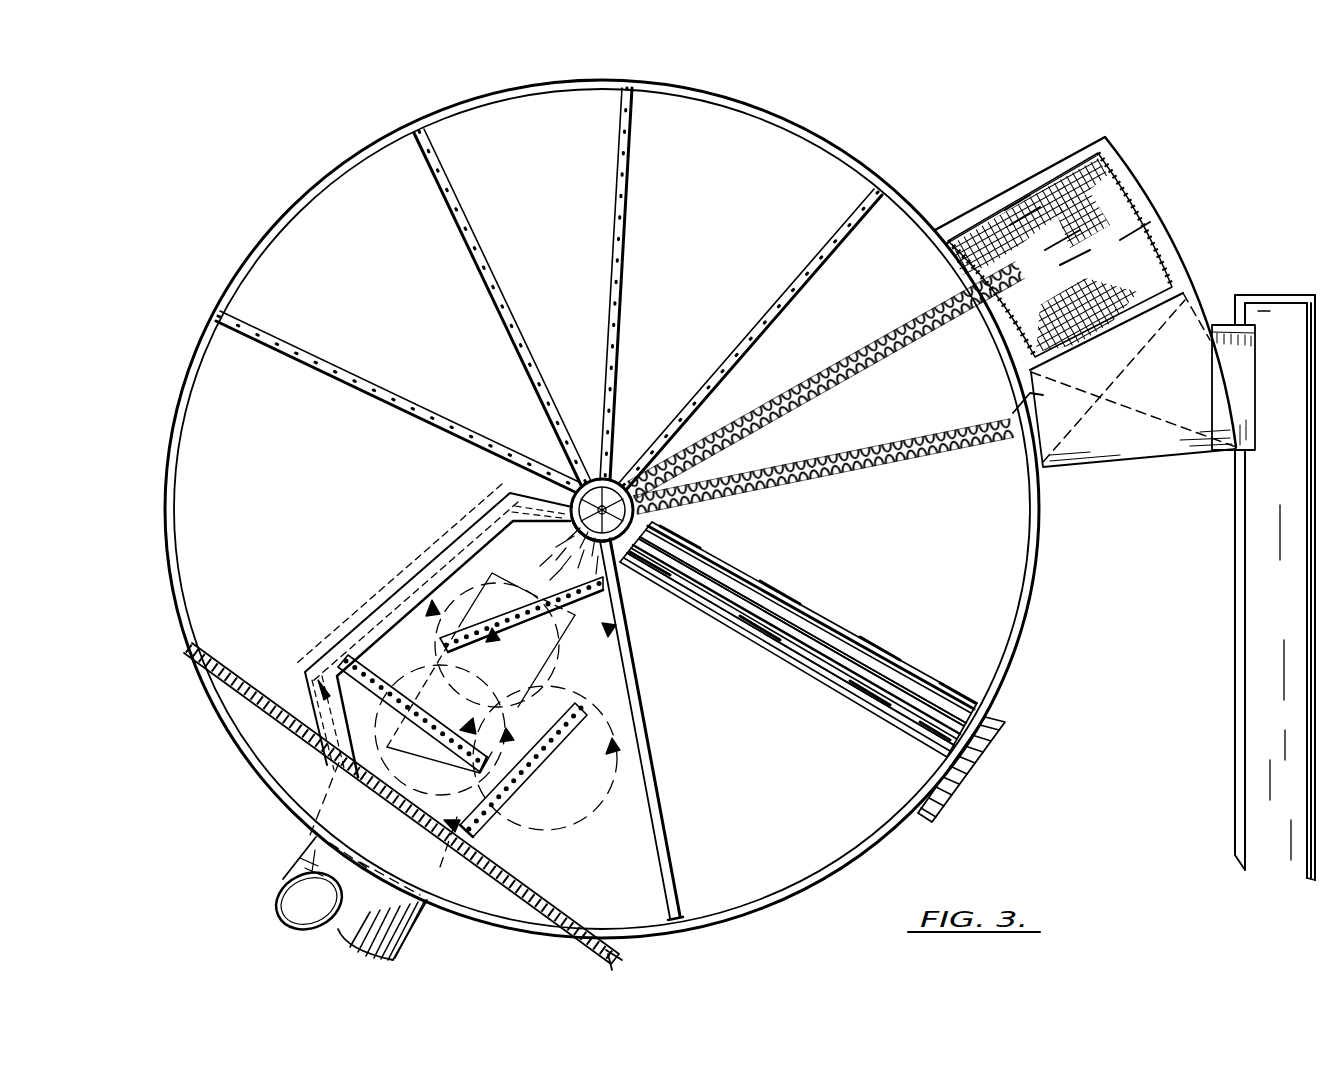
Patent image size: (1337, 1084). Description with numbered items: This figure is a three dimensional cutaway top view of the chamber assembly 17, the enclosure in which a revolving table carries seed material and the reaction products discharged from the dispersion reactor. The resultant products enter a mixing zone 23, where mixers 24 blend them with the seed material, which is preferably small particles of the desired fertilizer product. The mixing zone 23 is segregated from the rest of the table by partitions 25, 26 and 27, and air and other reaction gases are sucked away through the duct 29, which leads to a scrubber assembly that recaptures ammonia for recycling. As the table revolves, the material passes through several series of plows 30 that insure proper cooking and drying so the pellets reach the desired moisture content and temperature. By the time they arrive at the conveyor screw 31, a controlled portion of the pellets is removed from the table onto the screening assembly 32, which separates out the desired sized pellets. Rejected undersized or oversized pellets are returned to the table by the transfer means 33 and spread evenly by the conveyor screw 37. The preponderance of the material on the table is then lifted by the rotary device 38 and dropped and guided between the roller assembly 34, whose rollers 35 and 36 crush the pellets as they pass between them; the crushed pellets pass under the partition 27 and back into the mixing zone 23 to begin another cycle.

The chamber assembly 17 is at (308, 174).
The mixing zone 23 is at (420, 661).
The mixers 24 is at (398, 674).
The partition 25 is at (420, 545).
The partition 26 is at (327, 763).
The partition 27 is at (668, 848).
The duct 29 is at (307, 857).
The plows 30 is at (318, 352).
The conveyor screw 31 is at (878, 341).
The screening assembly 32 is at (982, 339).
The transfer means 33 is at (993, 394).
The roller assembly 34 is at (798, 645).
The roller 35 is at (840, 690).
The roller 36 is at (895, 712).
The conveyor screw 37 is at (888, 438).
The rotary device 38 is at (796, 598).